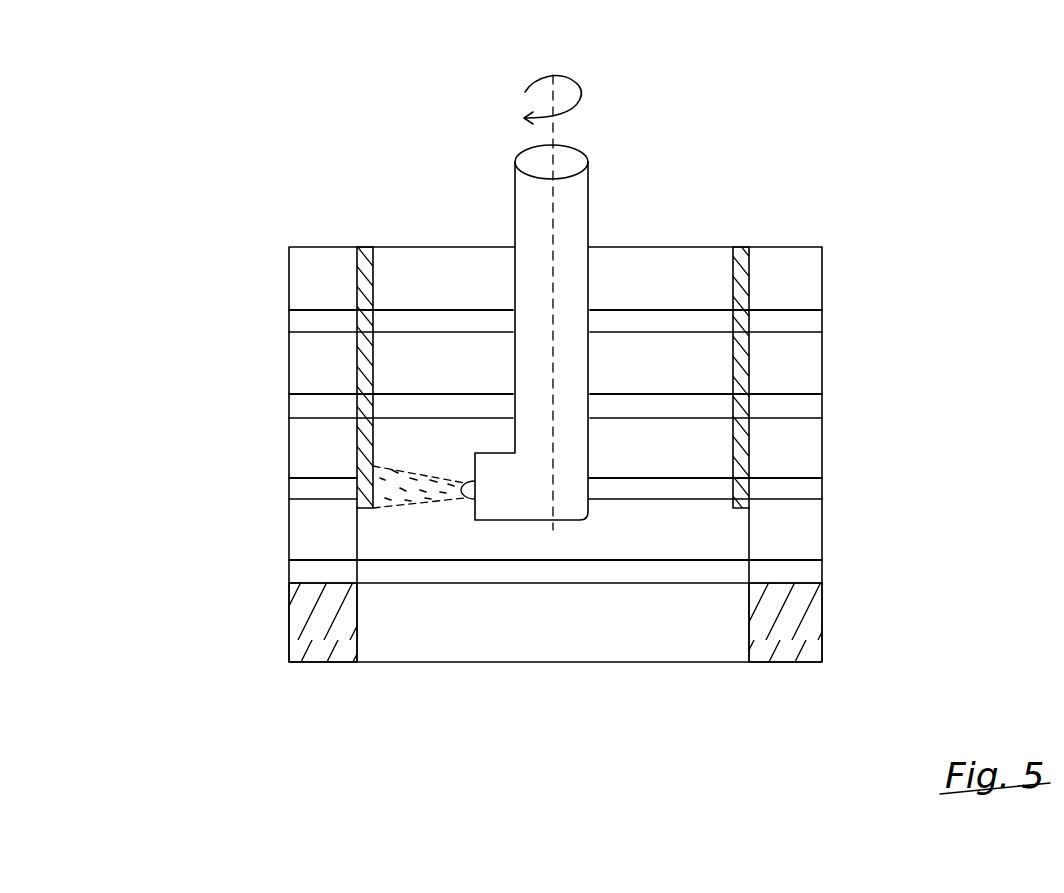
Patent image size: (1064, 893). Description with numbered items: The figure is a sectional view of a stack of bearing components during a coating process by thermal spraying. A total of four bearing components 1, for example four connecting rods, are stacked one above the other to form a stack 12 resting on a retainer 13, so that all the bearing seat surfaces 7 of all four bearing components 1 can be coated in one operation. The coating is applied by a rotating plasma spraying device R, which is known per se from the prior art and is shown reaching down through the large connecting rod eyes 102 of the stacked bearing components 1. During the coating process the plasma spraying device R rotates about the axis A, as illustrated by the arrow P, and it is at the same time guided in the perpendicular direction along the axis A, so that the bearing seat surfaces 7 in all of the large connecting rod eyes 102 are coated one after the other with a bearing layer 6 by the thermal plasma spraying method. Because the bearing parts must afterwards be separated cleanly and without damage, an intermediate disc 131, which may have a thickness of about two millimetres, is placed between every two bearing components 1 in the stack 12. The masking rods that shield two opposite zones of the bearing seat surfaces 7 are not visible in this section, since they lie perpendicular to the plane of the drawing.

The bearing component 1 is at (810, 285).
The intermediate disc 131 is at (810, 322).
The stack 12 is at (643, 410).
The retainer 13 is at (812, 635).
The bearing layer 6 is at (357, 275).
The bearing seat surface 7 is at (362, 518).
The large connecting rod eye 102 is at (663, 277).
The plasma spraying device R is at (577, 203).
The axis A is at (553, 128).
The arrow P is at (572, 90).